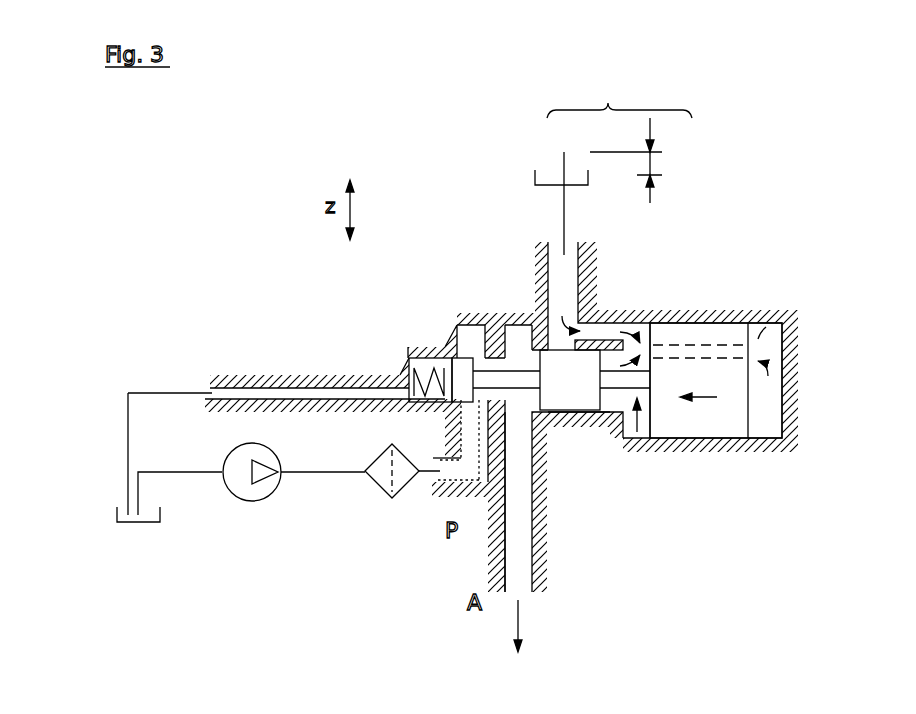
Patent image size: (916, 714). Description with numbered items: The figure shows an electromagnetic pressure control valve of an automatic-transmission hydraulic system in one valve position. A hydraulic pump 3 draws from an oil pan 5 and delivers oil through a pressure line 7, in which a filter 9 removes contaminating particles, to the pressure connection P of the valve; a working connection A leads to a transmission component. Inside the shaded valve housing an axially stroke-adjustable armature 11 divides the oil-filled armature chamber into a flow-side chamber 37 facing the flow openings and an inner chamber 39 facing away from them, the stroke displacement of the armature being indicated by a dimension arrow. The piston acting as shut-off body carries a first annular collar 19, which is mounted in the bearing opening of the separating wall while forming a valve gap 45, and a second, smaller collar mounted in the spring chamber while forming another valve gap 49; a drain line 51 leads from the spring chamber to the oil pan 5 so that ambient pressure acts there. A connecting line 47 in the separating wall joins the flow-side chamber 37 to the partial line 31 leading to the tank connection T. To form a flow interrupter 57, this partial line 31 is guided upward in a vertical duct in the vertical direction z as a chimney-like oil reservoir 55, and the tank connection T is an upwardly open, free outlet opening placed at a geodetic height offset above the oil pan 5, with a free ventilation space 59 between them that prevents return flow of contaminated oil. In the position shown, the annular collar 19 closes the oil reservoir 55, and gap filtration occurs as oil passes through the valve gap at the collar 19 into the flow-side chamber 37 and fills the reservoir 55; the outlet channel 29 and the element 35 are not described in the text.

The hydraulic pump 3 is at (259, 501).
The oil pan 5 is at (144, 524).
The pressure line 7 is at (316, 473).
The filter 9 is at (376, 492).
The armature 11 is at (748, 323).
The first annular collar 19 is at (587, 397).
The outlet channel A 29 is at (507, 557).
The partial line 31 is at (578, 257).
The check valve 35 is at (450, 449).
The flow-side chamber 37 is at (640, 430).
The inner chamber 39 is at (772, 350).
The valve gap 45 is at (572, 414).
The connecting line 47 is at (757, 343).
The valve gap 49 is at (452, 345).
The drain line 51 is at (288, 392).
The oil reservoir 55 is at (560, 288).
The flow interrupter 57 is at (624, 140).
The free ventilation space 59 is at (550, 173).